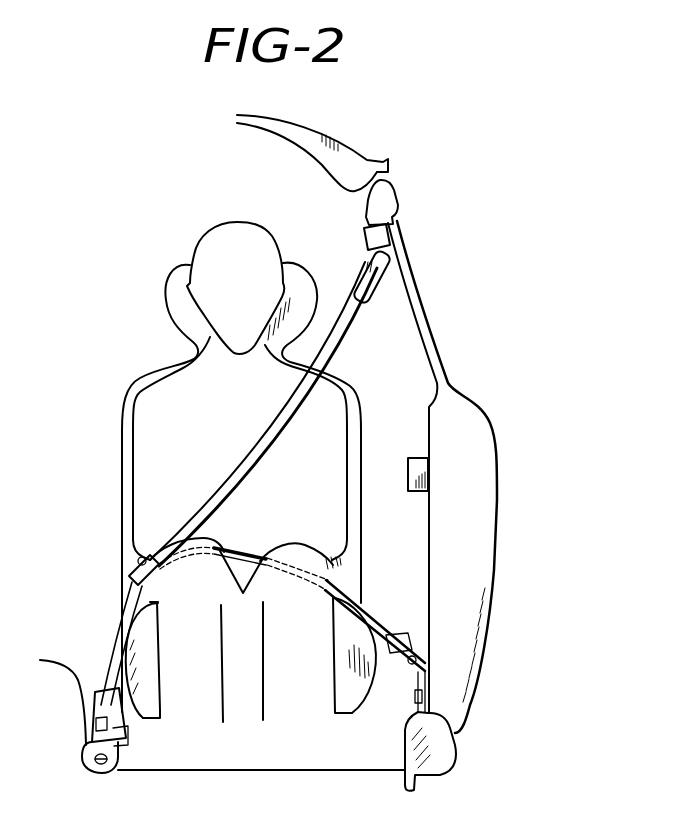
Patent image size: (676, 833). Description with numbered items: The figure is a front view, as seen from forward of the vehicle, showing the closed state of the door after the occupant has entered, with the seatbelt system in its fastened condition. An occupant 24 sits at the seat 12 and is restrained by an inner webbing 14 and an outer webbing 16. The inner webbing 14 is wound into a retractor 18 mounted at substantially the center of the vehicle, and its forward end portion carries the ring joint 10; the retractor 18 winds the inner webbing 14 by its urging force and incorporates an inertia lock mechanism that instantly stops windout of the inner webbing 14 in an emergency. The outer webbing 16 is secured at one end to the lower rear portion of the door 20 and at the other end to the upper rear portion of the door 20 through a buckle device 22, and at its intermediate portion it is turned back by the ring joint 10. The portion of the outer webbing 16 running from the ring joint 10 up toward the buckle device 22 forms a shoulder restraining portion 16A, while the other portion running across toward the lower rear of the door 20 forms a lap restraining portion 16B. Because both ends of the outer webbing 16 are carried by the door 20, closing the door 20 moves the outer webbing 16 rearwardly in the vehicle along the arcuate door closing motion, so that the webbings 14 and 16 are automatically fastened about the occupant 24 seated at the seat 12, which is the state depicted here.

The ring joint 10 is at (136, 566).
The seat 12 is at (360, 681).
The inner webbing 14 is at (113, 628).
The outer webbing 16 is at (388, 626).
The shoulder restraining portion 16A is at (343, 353).
The lap restraining portion 16B is at (250, 550).
The retractor 18 is at (123, 743).
The door 20 is at (480, 597).
The buckle device 22 is at (400, 255).
The occupant 24 is at (340, 521).